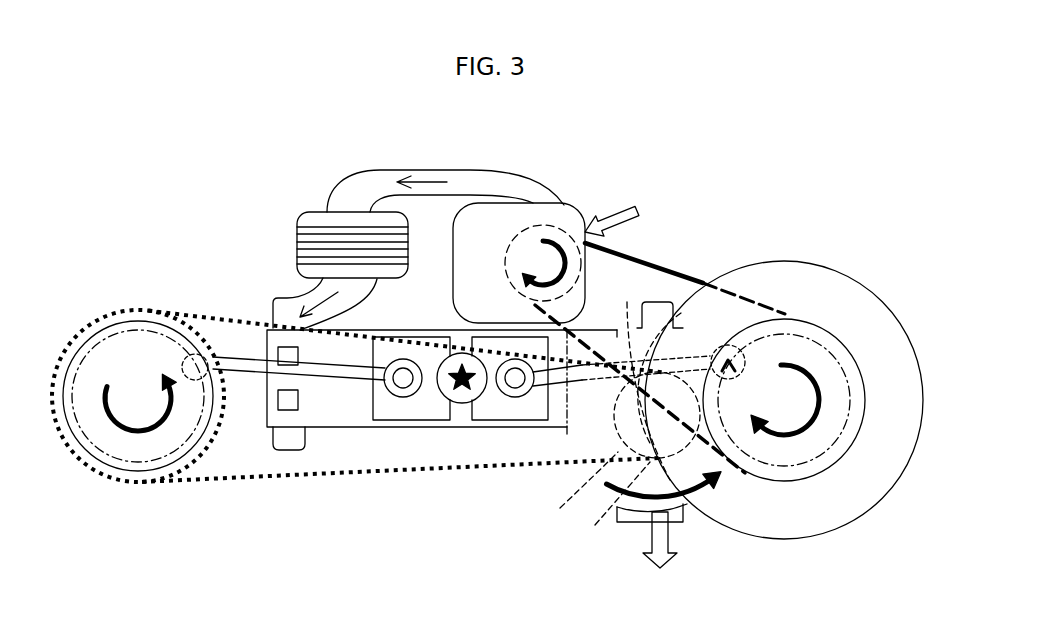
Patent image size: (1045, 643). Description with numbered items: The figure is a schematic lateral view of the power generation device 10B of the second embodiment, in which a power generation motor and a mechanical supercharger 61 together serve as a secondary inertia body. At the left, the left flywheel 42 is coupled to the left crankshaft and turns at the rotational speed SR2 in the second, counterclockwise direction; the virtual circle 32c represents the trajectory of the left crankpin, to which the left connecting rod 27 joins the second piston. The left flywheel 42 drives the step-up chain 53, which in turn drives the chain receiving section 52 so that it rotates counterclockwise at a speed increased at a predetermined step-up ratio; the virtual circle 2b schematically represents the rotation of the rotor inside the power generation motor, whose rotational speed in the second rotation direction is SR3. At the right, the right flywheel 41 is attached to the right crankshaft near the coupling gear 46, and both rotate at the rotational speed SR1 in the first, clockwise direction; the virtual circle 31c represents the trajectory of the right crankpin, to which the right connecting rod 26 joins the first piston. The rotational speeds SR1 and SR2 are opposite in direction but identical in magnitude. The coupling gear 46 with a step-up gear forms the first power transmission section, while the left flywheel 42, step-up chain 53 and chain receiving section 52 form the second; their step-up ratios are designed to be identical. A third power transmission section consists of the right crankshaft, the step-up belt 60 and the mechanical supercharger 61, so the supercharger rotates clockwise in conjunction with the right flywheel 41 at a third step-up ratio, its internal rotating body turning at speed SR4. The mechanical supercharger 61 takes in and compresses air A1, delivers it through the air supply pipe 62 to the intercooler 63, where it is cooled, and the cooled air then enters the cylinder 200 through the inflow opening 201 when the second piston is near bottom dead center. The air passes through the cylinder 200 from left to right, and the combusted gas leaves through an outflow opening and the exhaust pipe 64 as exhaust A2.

The power generation device 10B is at (870, 158).
The left flywheel 42 is at (84, 338).
The rotational speed SR2 is at (120, 428).
The virtual circle 32c is at (138, 478).
The step-up chain 53 is at (246, 484).
The left connecting rod 27 is at (248, 372).
The cylinder 200 is at (430, 328).
The inflow opening 201 is at (298, 401).
The intercooler 63 is at (298, 231).
The air supply pipe 62 is at (340, 183).
The mechanical supercharger 61 is at (562, 203).
The rotational speed SR4 is at (543, 241).
The air A1 is at (618, 208).
The step-up belt 60 is at (657, 262).
The right connecting rod 26 is at (630, 401).
The chain receiving section 52 is at (578, 482).
The virtual circle 2b is at (615, 480).
The right flywheel 41 is at (833, 532).
The virtual circle 31c is at (835, 447).
The rotational speed SR1 is at (785, 437).
The coupling gear 46 is at (760, 482).
The rotational speed SR3 is at (700, 488).
The exhaust pipe 64 is at (630, 525).
The exhaust A2 is at (647, 567).